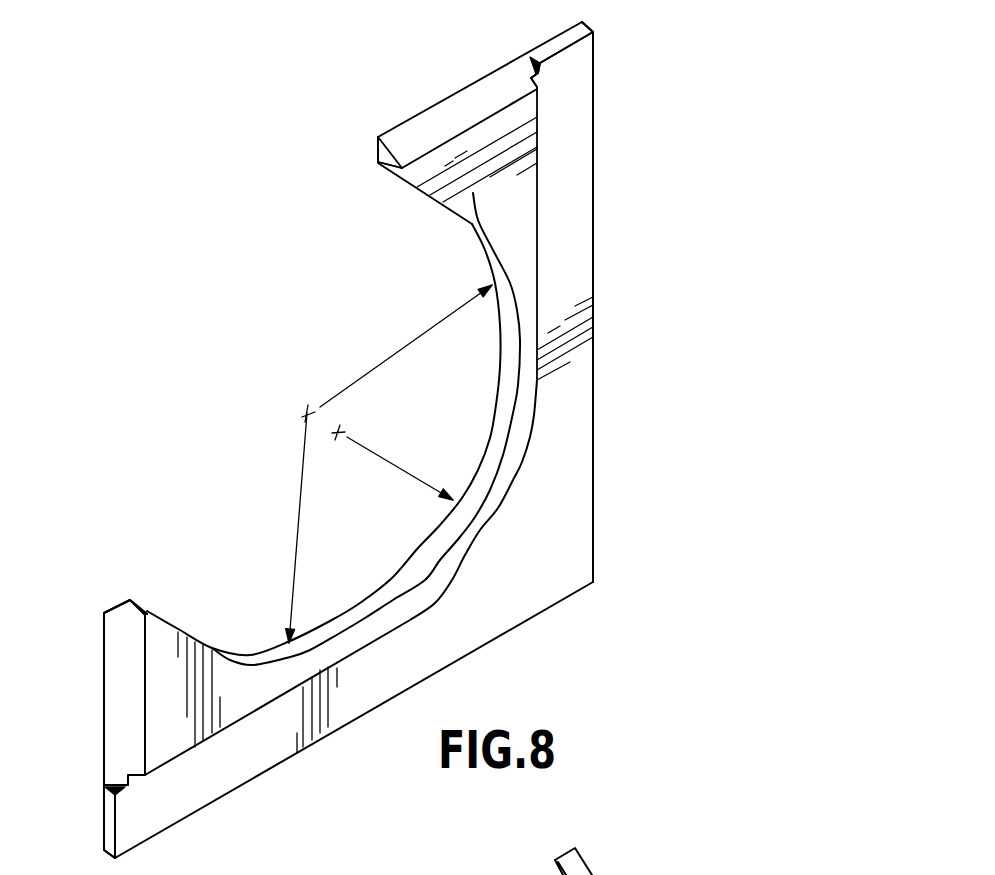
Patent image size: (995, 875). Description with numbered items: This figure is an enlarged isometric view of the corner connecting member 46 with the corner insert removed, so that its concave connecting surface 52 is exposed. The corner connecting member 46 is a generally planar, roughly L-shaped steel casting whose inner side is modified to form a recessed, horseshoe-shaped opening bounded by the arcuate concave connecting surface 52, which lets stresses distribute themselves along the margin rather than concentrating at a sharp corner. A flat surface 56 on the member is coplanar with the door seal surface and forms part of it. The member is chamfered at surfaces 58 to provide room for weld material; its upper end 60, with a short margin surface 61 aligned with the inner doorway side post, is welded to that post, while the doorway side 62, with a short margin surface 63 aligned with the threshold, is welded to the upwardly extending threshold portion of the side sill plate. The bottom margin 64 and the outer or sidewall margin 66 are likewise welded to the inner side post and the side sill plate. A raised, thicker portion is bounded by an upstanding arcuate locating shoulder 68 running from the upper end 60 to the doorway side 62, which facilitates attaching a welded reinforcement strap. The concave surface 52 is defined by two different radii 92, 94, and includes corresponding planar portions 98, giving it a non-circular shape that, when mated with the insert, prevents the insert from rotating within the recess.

The corner connecting member 46 is at (612, 180).
The concave connecting surface 52 is at (488, 438).
The flat surface 56 is at (472, 224).
The chamfered surfaces 58 is at (423, 122).
The upper end 60 is at (485, 74).
The short margin surface 61 is at (378, 163).
The doorway side 62 is at (105, 745).
The short margin surface 63 is at (130, 600).
The bottom margin 64 is at (482, 649).
The outer or sidewall margin 66 is at (596, 383).
The locating shoulder 68 is at (538, 82).
The radius 92 is at (393, 352).
The radius 94 is at (397, 468).
The planar portions 98 is at (505, 367).